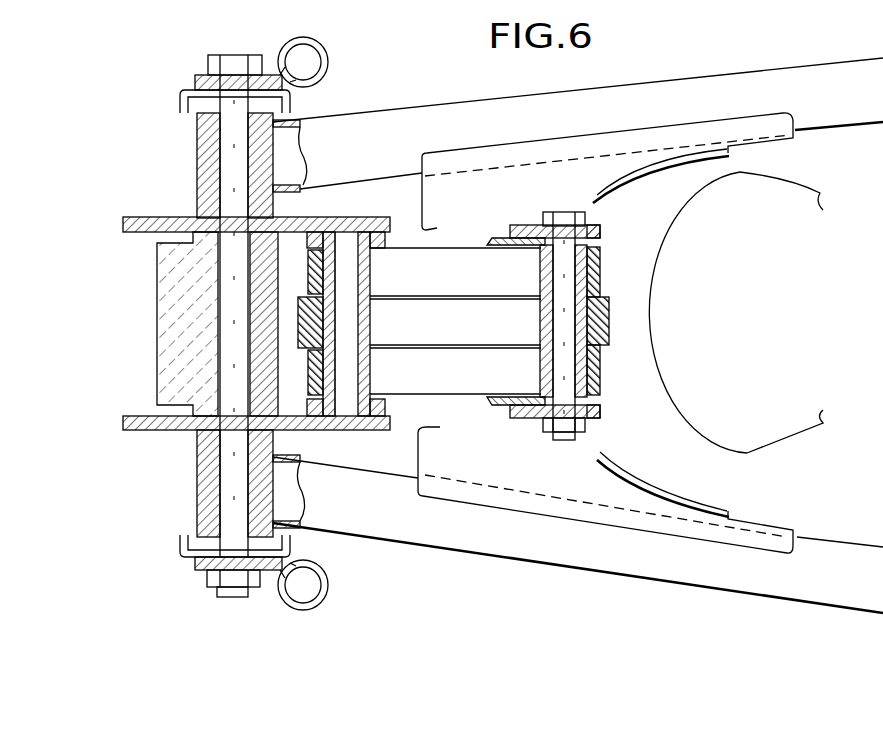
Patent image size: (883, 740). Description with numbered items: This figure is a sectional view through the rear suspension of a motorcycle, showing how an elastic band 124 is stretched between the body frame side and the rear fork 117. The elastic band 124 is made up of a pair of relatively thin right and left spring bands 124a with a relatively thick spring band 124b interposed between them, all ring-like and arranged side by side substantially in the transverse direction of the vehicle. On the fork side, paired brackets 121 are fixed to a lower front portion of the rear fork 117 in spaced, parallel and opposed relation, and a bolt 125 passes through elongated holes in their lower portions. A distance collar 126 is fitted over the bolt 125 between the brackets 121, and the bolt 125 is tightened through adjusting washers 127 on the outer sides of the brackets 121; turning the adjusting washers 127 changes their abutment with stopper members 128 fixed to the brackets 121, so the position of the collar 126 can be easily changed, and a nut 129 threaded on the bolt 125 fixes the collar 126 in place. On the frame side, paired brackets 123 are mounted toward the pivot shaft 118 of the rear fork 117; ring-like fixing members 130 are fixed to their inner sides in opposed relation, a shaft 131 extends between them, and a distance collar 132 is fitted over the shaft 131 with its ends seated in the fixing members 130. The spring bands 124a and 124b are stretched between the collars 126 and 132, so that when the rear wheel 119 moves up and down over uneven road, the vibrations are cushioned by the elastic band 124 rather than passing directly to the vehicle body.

The rear fork 117 is at (882, 598).
The pivot shaft 118 is at (238, 543).
The rear wheel 119 is at (770, 438).
The brackets 121 is at (500, 240).
The brackets 123 is at (146, 218).
The elastic band 124 is at (466, 397).
The spring bands 124a is at (600, 267).
The spring band 124b is at (609, 327).
The bolt 125 is at (563, 403).
The distance collar 126 is at (587, 417).
The adjusting washers 127 is at (600, 236).
The stopper members 128 is at (527, 226).
The nut 129 is at (578, 455).
The fixing members 130 is at (380, 231).
The shaft 131 is at (347, 243).
The distance collar 132 is at (330, 430).